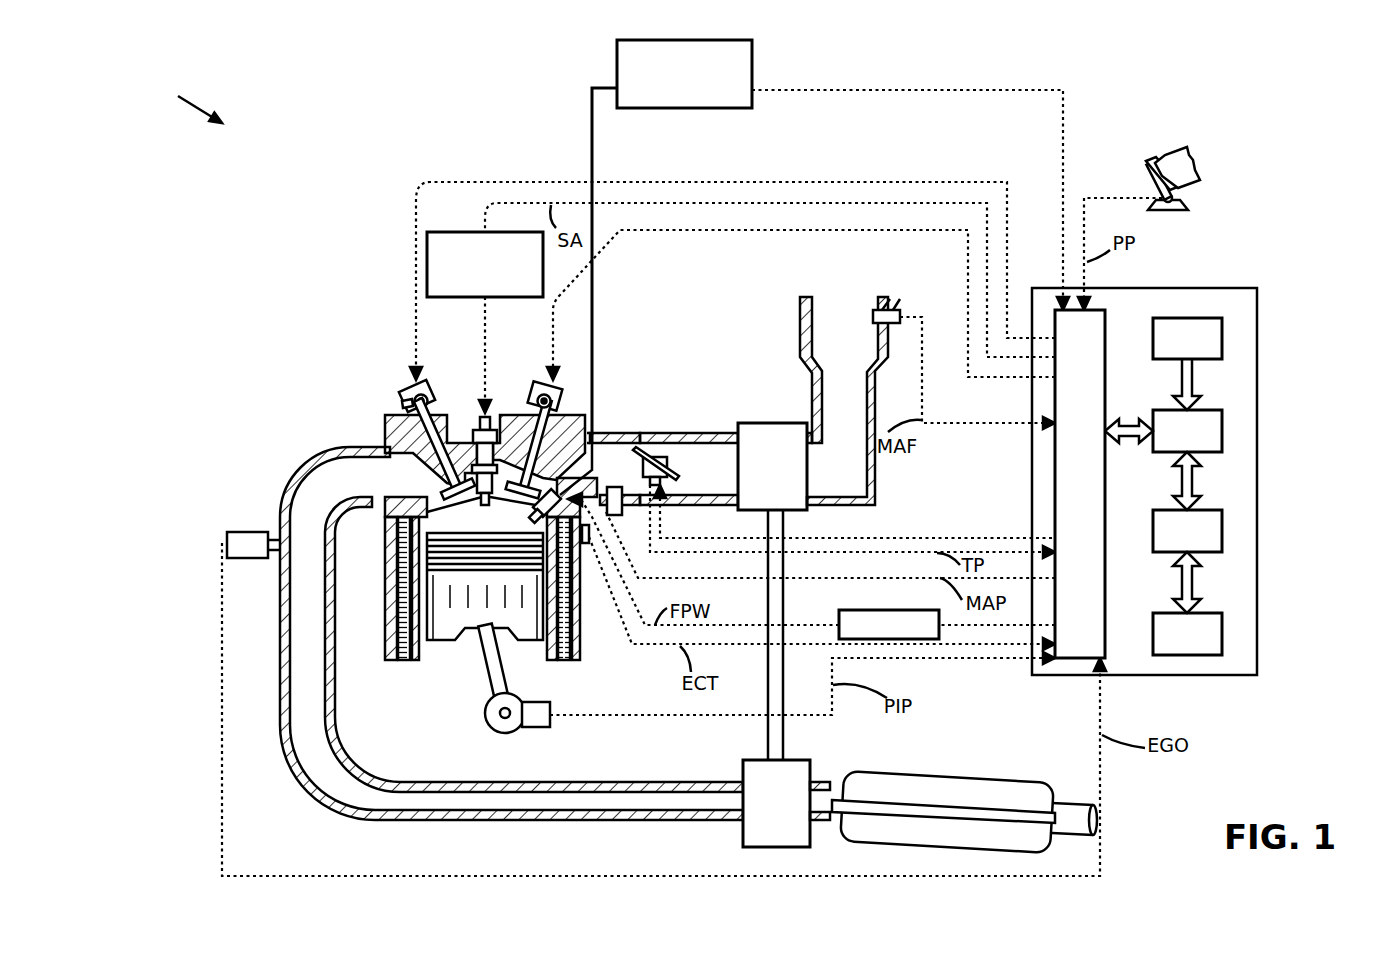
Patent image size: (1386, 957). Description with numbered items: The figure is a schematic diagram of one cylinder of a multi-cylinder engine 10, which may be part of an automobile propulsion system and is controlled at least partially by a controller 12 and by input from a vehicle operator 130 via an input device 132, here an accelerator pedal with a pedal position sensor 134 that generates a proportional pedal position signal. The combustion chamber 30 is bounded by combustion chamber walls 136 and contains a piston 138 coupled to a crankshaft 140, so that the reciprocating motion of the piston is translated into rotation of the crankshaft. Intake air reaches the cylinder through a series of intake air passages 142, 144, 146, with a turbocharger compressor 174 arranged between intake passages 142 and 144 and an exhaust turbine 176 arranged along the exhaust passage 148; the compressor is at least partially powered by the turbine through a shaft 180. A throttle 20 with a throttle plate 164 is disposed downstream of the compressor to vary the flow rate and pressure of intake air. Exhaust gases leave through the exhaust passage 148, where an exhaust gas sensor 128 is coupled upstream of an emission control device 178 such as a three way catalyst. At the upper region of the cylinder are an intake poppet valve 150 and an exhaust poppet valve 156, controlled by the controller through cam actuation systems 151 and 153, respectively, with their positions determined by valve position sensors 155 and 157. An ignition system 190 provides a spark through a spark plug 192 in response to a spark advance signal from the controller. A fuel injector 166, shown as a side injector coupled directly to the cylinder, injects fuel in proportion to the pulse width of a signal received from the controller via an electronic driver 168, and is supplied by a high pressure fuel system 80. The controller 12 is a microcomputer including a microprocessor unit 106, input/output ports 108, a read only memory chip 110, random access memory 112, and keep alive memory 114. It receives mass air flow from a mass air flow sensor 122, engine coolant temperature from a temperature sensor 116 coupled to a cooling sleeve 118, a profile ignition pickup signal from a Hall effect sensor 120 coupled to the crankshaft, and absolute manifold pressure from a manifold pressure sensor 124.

The engine 10 is at (183, 101).
The controller 12 is at (1257, 292).
The throttle 20 is at (665, 455).
The combustion chamber 30 is at (477, 614).
The high pressure fuel system 80 is at (752, 60).
The microprocessor unit 106 is at (1222, 432).
The input/output ports 108 is at (1105, 318).
The read only memory chip 110 is at (1222, 343).
The random access memory 112 is at (1222, 542).
The keep alive memory 114 is at (1222, 640).
The temperature sensor 116 is at (590, 544).
The cooling sleeve 118 is at (574, 660).
The Hall effect sensor 120 is at (541, 727).
The mass air flow sensor 122 is at (964, 353).
The manifold pressure sensor 124 is at (617, 520).
The exhaust gas sensor 128 is at (228, 533).
The vehicle operator 130 is at (1198, 165).
The input device 132 is at (1145, 175).
The pedal position sensor 134 is at (1190, 200).
The combustion chamber walls 136 is at (420, 660).
The piston 138 is at (467, 613).
The crankshaft 140 is at (493, 730).
The intake air passage 142 is at (831, 344).
The intake air passage 144 is at (695, 478).
The intake air passage 146 is at (597, 478).
The exhaust passage 148 is at (342, 487).
The intake poppet valve 150 is at (497, 450).
The cam actuation system 151 is at (537, 383).
The cam actuation system 153 is at (430, 383).
The valve position sensor 155 is at (590, 400).
The exhaust poppet valve 156 is at (437, 486).
The valve position sensor 157 is at (402, 400).
The throttle plate 164 is at (626, 446).
The fuel injector 166 is at (792, 534).
The electronic driver 168 is at (841, 610).
The compressor 174 is at (760, 422).
The exhaust turbine 176 is at (742, 835).
The emission control device 178 is at (1012, 780).
The shaft 180 is at (785, 725).
The ignition system 190 is at (443, 232).
The spark plug 192 is at (480, 450).